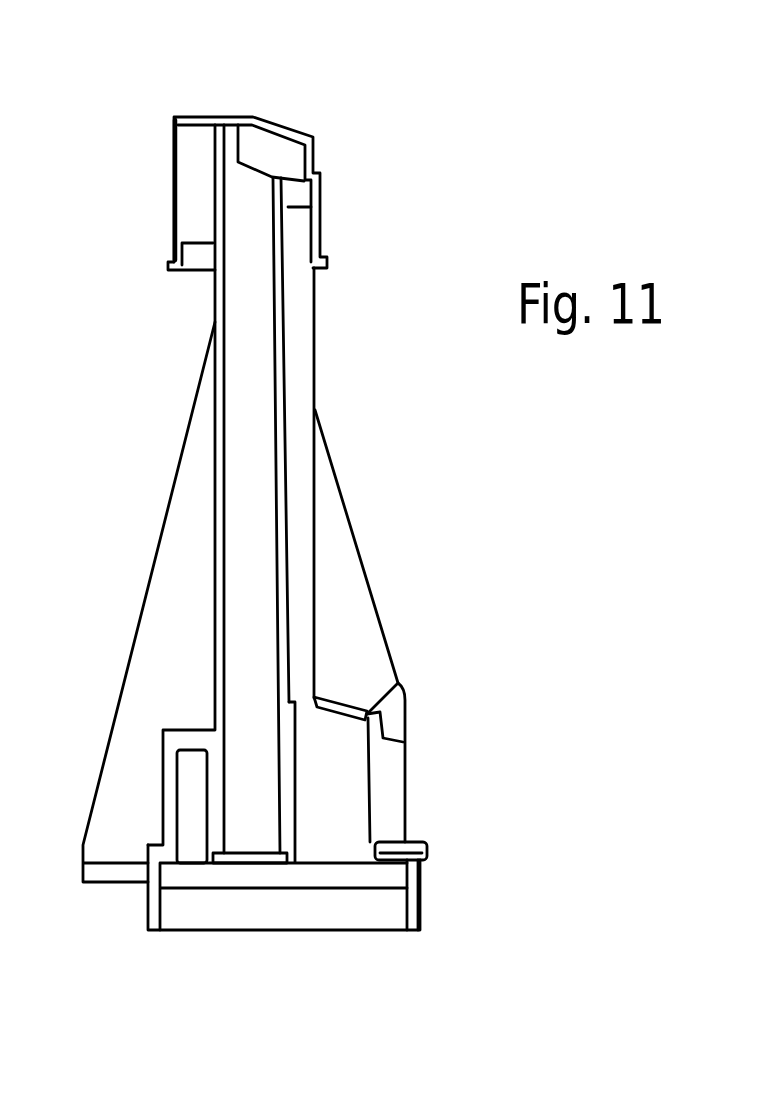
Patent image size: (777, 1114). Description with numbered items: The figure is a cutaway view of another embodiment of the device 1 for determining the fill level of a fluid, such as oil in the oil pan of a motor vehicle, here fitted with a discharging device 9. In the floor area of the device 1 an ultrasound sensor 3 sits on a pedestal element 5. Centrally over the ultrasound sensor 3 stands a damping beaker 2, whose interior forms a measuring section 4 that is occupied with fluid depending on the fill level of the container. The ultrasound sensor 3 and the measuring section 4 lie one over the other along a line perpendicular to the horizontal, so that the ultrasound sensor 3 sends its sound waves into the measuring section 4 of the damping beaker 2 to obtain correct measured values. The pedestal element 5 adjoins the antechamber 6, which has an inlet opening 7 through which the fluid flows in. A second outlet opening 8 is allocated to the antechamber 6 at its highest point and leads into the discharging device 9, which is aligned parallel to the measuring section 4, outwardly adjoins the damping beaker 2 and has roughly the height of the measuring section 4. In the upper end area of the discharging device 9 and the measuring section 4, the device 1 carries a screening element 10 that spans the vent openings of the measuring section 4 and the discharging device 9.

The device 1 is at (133, 528).
The damping beaker 2 is at (219, 410).
The ultrasound sensor 3 is at (247, 855).
The measuring section 4 is at (256, 284).
The pedestal element 5 is at (222, 922).
The antechamber 6 is at (337, 780).
The inlet opening 7 is at (395, 837).
The second outlet opening 8 is at (307, 707).
The discharging device 9 is at (298, 388).
The screening element 10 is at (232, 122).